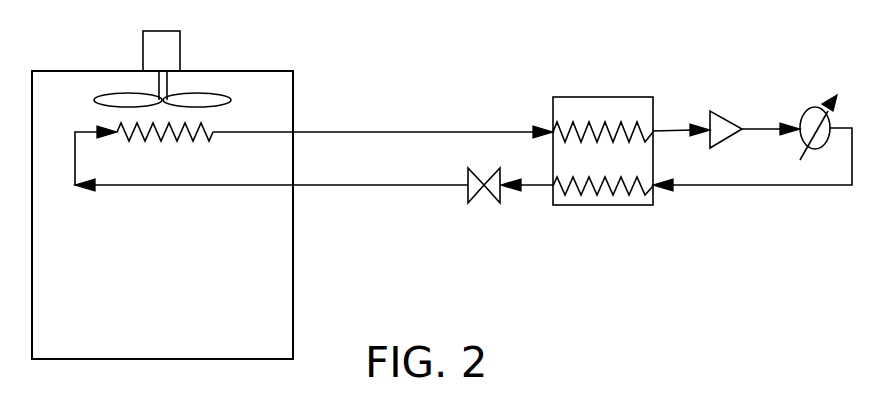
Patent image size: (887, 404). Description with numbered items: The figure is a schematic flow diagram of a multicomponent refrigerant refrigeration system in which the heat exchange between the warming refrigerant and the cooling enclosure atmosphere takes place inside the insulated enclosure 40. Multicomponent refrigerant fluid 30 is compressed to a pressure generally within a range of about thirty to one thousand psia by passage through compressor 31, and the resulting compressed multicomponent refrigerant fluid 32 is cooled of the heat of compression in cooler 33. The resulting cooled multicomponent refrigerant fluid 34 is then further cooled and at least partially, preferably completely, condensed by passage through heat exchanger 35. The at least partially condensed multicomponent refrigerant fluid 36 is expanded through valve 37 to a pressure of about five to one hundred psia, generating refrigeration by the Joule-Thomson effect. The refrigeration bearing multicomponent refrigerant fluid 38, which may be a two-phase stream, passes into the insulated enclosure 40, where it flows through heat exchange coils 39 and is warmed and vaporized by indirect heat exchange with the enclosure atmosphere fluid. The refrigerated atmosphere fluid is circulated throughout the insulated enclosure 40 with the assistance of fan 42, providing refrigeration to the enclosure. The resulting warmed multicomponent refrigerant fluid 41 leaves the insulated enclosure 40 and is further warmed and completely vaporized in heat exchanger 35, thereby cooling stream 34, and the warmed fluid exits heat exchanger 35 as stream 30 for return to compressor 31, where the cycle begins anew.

The multicomponent refrigerant fluid 30 is at (665, 130).
The compressor 31 is at (725, 110).
The compressed multicomponent refrigerant fluid 32 is at (755, 128).
The cooler 33 is at (805, 107).
The cooled multicomponent refrigerant fluid 34 is at (785, 185).
The heat exchanger 35 is at (615, 205).
The at least partially condensed multicomponent refrigerant fluid 36 is at (533, 185).
The valve 37 is at (478, 203).
The refrigeration bearing multicomponent refrigerant fluid 38 is at (392, 185).
The heat exchange coils 39 is at (173, 140).
The insulated enclosure 40 is at (293, 293).
The warmed multicomponent refrigerant fluid 41 is at (398, 131).
The fan 42 is at (112, 94).